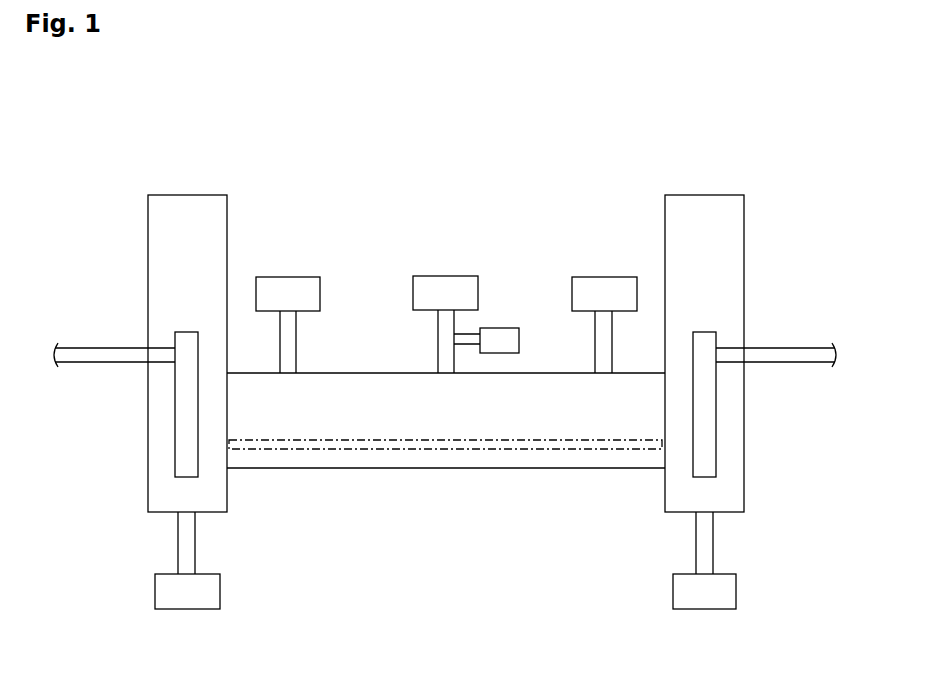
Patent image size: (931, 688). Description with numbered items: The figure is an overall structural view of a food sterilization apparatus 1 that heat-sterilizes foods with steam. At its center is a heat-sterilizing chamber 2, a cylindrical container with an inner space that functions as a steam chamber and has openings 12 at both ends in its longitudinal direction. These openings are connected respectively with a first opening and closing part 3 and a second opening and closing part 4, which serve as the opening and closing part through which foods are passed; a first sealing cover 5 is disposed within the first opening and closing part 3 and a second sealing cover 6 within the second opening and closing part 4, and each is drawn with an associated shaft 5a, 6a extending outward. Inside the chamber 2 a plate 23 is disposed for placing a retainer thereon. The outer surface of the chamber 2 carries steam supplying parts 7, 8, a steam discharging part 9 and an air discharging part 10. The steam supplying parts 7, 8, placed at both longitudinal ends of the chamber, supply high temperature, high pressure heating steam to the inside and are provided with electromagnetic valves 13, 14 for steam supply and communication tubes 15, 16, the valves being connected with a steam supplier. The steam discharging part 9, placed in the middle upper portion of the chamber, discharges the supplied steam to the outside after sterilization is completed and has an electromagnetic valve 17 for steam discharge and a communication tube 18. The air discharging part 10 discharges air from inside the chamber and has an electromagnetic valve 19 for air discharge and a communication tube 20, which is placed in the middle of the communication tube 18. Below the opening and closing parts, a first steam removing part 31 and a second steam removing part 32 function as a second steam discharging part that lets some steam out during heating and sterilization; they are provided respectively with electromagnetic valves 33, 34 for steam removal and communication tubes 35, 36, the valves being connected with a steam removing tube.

The food sterilization apparatus 1 is at (535, 140).
The heat-sterilizing chamber 2 is at (332, 468).
The first opening and closing part 3 is at (188, 195).
The second opening and closing part 4 is at (703, 195).
The first sealing cover 5 is at (176, 455).
The left axle shaft 5a is at (92, 347).
The second sealing cover 6 is at (716, 455).
The right axle shaft 6a is at (787, 347).
The steam supplying part 7 is at (310, 245).
The steam supplying part 8 is at (628, 245).
The steam discharging part 9 is at (467, 245).
The air discharging part 10 is at (520, 300).
The openings 12 is at (240, 413).
The electromagnetic valve for steam supply 13 is at (270, 277).
The electromagnetic valve for steam supply 14 is at (588, 277).
The communication tube 15 is at (280, 340).
The communication tube 16 is at (612, 338).
The electromagnetic valve for steam discharge 17 is at (430, 276).
The communication tube 18 is at (438, 340).
The electromagnetic valve for air discharge 19 is at (510, 343).
The communication tube 20 is at (464, 333).
The plate 23 is at (449, 449).
The first steam removing part 31 is at (140, 596).
The second steam removing part 32 is at (745, 596).
The electromagnetic valve for steam removal 33 is at (190, 612).
The electromagnetic valve for steam removal 34 is at (700, 612).
The communication tube 35 is at (178, 545).
The communication tube 36 is at (713, 547).